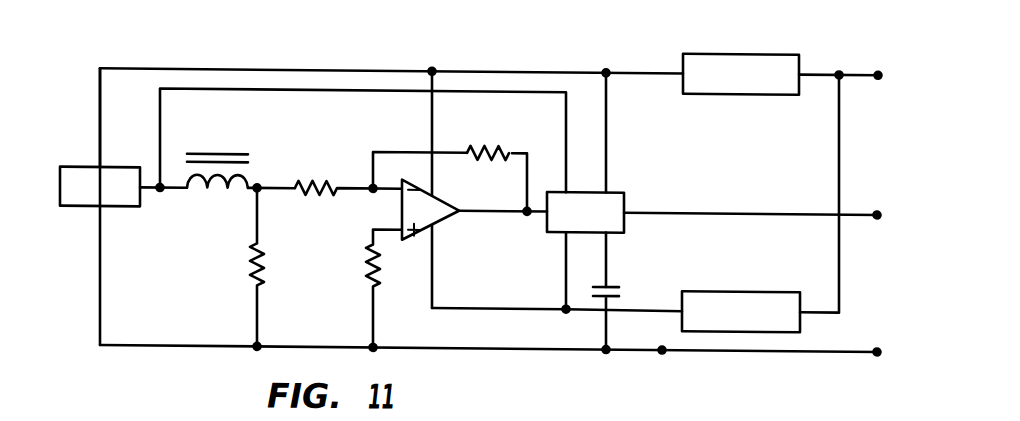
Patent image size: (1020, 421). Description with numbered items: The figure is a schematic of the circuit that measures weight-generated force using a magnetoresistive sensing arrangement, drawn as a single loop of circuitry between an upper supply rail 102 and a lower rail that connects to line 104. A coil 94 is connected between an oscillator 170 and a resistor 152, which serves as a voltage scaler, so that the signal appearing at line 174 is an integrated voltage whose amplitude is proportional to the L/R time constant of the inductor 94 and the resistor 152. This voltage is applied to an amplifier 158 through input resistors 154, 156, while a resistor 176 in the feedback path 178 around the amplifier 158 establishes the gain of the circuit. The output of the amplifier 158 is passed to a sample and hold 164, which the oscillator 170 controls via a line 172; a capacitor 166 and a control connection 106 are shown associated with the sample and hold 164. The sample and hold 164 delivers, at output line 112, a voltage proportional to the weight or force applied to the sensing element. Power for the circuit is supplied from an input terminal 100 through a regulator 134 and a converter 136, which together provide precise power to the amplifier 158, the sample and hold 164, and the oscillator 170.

The coil 94 is at (210, 185).
The supply terminal 100 is at (862, 67).
The supply line 102 is at (479, 68).
The line 104 is at (850, 345).
The control line 106 is at (462, 304).
The line 112 is at (857, 204).
The regulator 134 is at (743, 91).
The converter 136 is at (760, 286).
The resistor 152 is at (246, 275).
The resistor 154 is at (318, 184).
The resistor 156 is at (366, 276).
The amplifier 158 is at (442, 199).
The sample and hold 164 is at (547, 220).
The capacitor 166 is at (597, 292).
The oscillator 170 is at (118, 206).
The line 172 is at (160, 123).
The line 174 is at (277, 184).
The resistor 176 is at (488, 145).
The feedback line 178 is at (527, 159).